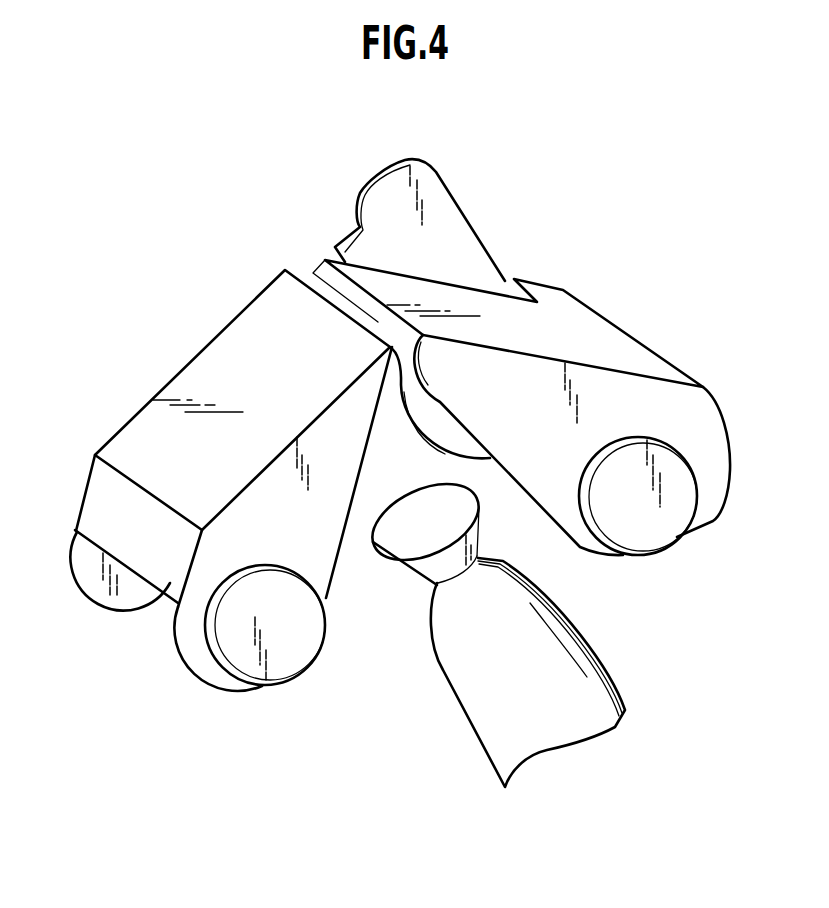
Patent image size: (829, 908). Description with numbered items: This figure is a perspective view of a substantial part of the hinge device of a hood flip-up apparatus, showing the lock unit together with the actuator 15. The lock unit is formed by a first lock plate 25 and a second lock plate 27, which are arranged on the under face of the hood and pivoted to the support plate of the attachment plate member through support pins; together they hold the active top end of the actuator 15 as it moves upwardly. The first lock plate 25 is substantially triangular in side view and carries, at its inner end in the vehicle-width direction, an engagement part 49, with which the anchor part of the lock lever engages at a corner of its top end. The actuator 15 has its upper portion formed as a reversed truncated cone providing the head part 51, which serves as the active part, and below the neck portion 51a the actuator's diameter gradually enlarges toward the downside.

The actuator 15 is at (605, 662).
The first lock plate 25 is at (617, 322).
The second lock plate 27 is at (182, 367).
The engagement part 49 is at (392, 192).
The head part 51 is at (392, 550).
The neck portion 51a is at (477, 558).